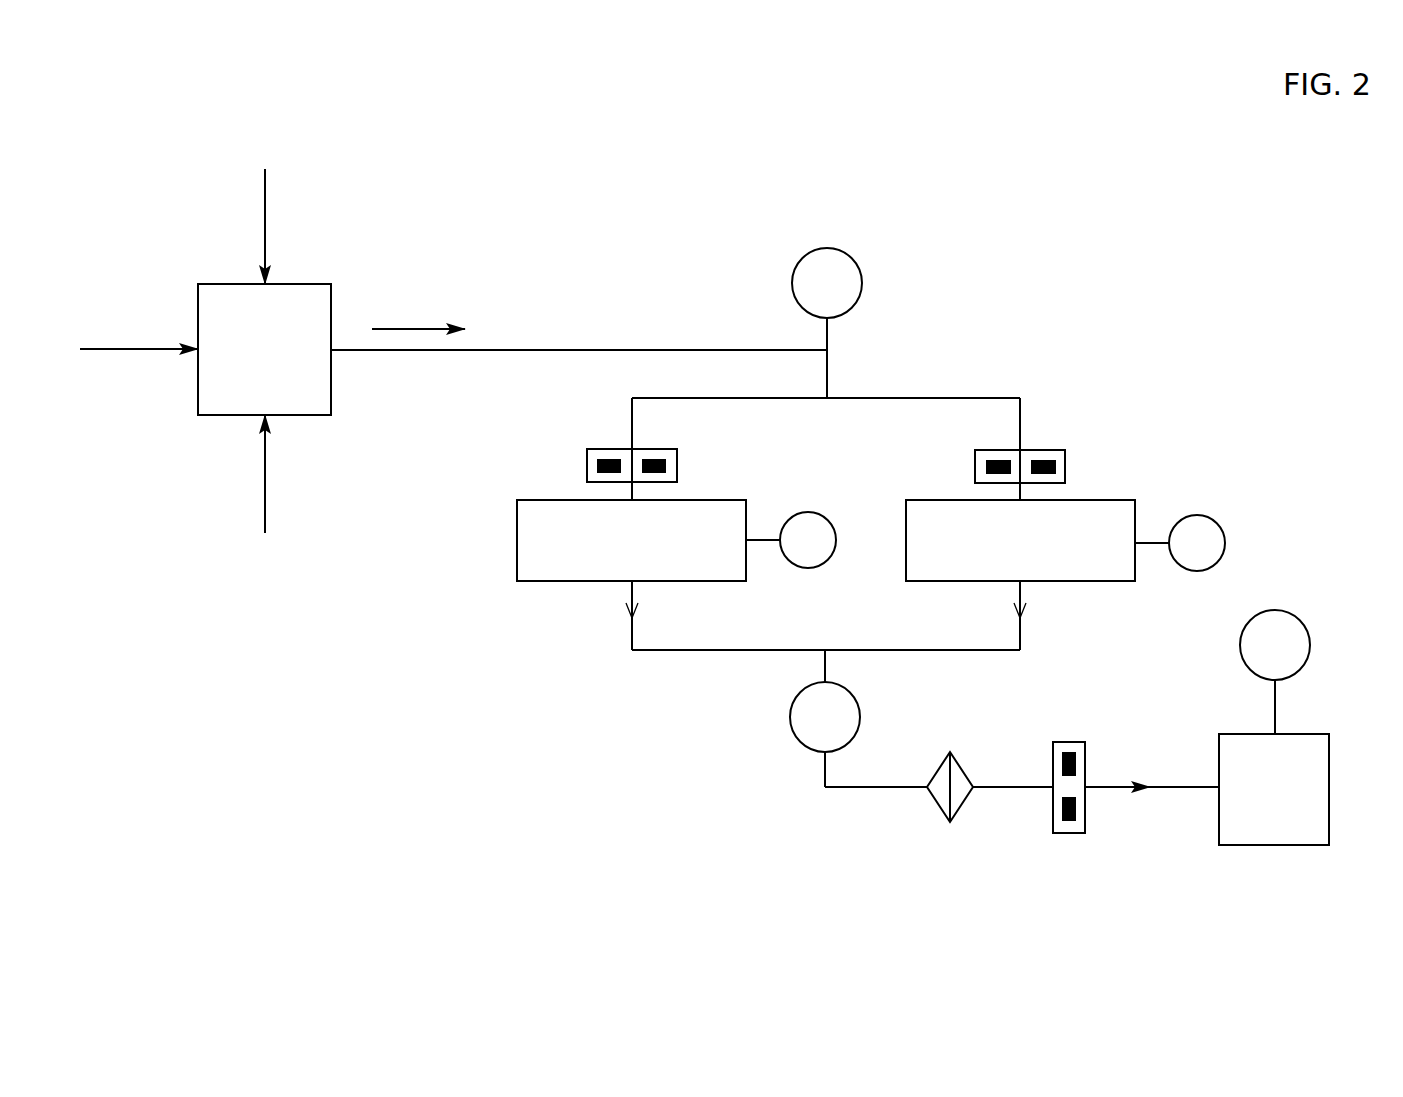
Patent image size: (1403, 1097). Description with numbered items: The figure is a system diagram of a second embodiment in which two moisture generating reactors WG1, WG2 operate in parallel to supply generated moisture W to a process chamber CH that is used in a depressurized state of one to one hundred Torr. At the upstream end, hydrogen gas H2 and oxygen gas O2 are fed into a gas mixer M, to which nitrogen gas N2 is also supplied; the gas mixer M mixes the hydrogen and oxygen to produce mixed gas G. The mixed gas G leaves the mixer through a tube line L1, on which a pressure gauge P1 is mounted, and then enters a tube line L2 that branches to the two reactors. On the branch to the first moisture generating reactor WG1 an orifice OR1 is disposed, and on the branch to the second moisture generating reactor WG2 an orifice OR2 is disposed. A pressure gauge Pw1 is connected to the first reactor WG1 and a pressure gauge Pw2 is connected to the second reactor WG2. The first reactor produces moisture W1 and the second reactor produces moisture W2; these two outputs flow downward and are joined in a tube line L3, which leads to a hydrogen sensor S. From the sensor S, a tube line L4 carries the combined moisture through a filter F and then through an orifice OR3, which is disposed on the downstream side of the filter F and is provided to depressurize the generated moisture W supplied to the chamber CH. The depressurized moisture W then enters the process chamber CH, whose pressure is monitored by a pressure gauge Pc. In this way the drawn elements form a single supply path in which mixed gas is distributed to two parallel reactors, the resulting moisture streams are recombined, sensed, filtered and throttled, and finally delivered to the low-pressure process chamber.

The gas mixer M is at (316, 284).
The oxygen gas O2 is at (268, 210).
The hydrogen gas H2 is at (118, 349).
The nitrogen gas N2 is at (266, 496).
The mixed gas G is at (422, 327).
The tube line L1 is at (646, 350).
The pressure gauge P1 is at (827, 299).
The tube line L2 is at (945, 398).
The orifice OR1 is at (677, 462).
The orifice OR2 is at (1065, 463).
The moisture generating reactor WG1 is at (517, 560).
The moisture generating reactor WG2 is at (906, 562).
The pressure gauge Pw1 is at (791, 540).
The pressure gauge Pw2 is at (1180, 543).
The moisture W1 is at (627, 607).
The moisture W2 is at (1025, 610).
The tube line L3 is at (910, 650).
The H2 sensor S is at (790, 720).
The tube line L4 is at (878, 787).
The filter F is at (965, 803).
The orifice OR3 is at (1070, 742).
The moisture W is at (1141, 787).
The process chamber CH is at (1329, 785).
The pressure gauge Pc is at (1275, 672).